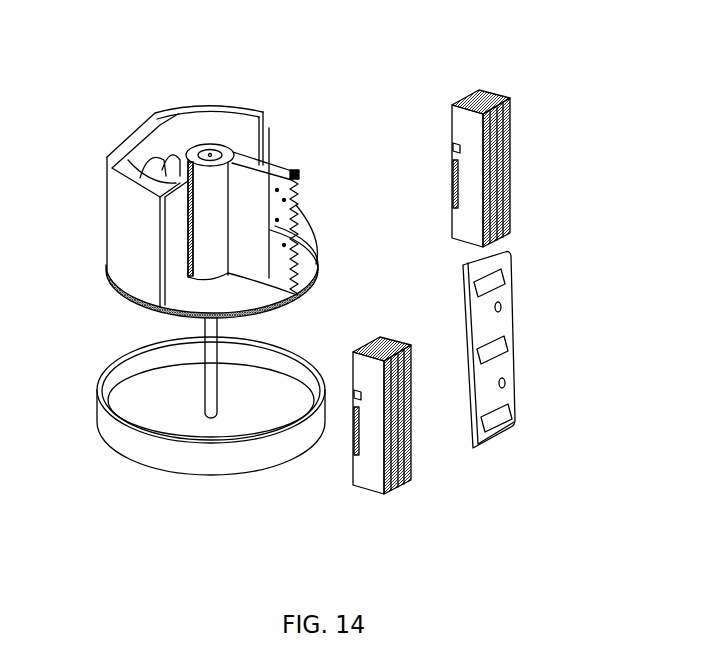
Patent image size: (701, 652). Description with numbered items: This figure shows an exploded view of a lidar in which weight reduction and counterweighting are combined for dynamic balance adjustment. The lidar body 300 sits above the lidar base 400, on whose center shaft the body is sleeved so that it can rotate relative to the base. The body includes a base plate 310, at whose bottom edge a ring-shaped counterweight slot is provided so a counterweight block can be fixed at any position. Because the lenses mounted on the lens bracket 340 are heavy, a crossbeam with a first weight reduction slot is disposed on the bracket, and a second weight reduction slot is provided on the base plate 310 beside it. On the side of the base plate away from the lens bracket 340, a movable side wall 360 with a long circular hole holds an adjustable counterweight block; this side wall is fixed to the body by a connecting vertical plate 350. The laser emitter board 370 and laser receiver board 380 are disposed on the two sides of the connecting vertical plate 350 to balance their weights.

The lidar body 300 is at (268, 147).
The base plate 310 is at (142, 310).
The lens bracket 340 is at (162, 160).
The connecting vertical plate 350 is at (288, 174).
The movable side wall 360 is at (502, 283).
The laser emitter board 370 is at (407, 480).
The laser receiver board 380 is at (493, 98).
The lidar base 400 is at (218, 462).